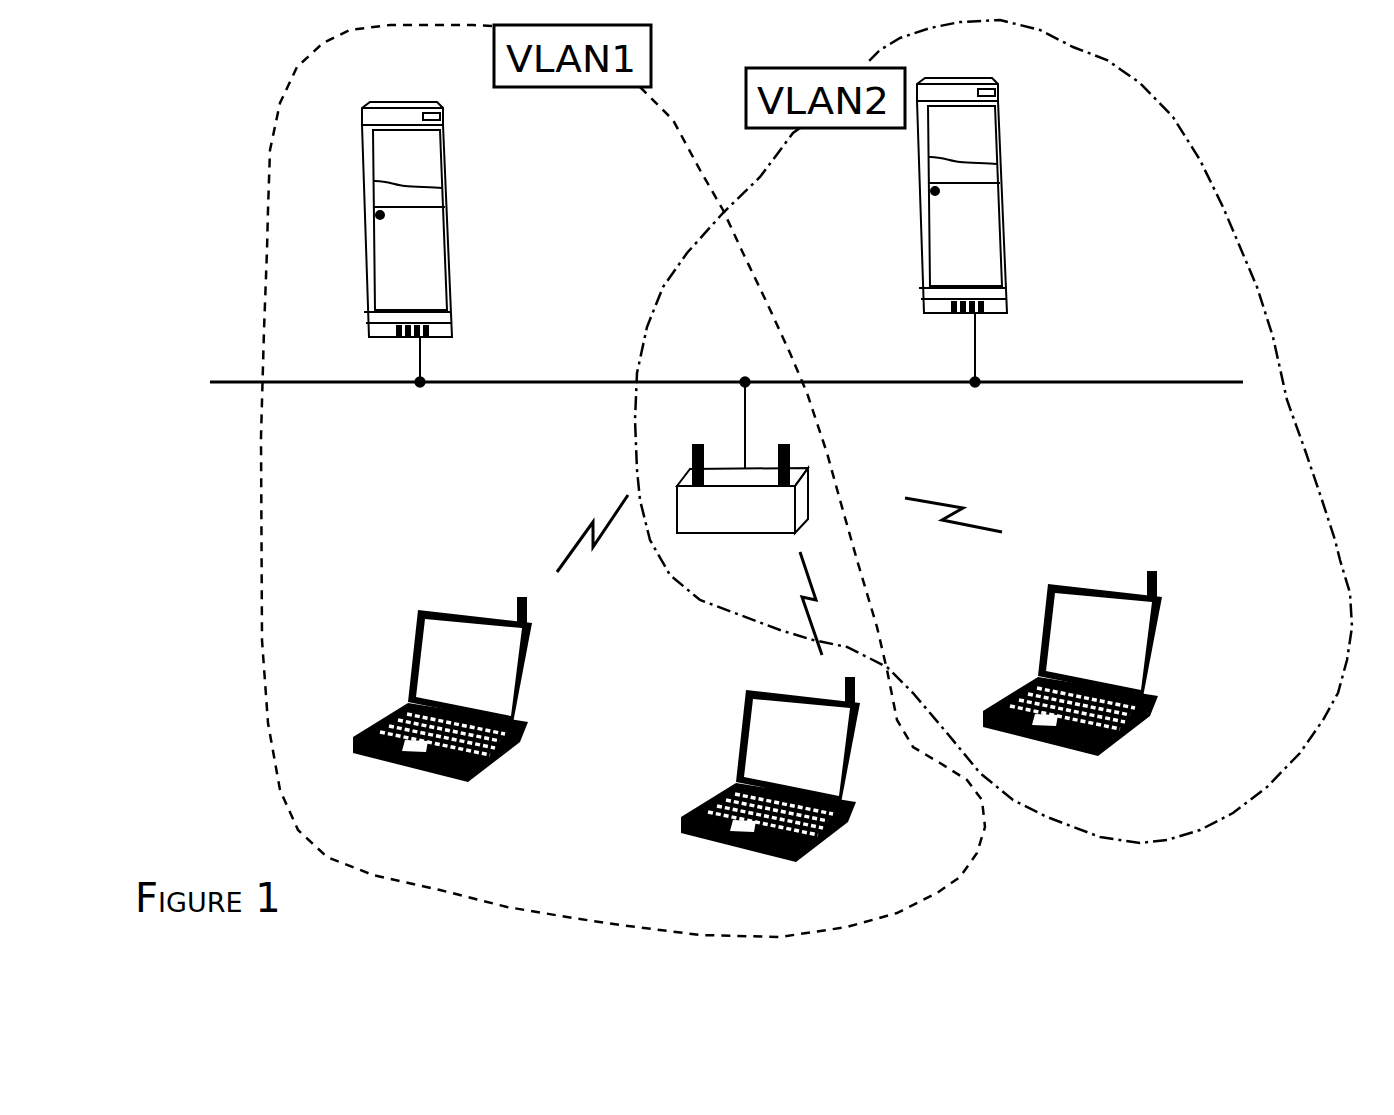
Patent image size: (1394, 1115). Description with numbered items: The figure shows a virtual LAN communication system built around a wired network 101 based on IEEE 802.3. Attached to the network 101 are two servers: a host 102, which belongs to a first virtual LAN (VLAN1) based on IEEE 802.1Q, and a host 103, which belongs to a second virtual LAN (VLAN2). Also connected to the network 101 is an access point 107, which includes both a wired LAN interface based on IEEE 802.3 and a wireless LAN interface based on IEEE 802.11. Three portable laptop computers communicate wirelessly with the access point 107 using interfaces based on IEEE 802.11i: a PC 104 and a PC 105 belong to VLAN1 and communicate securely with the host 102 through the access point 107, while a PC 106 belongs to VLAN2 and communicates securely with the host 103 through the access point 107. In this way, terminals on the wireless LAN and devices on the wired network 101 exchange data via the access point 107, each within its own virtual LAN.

The network 101 is at (1122, 375).
The host 102 is at (452, 152).
The host 103 is at (1005, 136).
The PC 104 is at (535, 652).
The PC 105 is at (850, 803).
The PC 106 is at (1163, 655).
The access point 107 is at (797, 465).